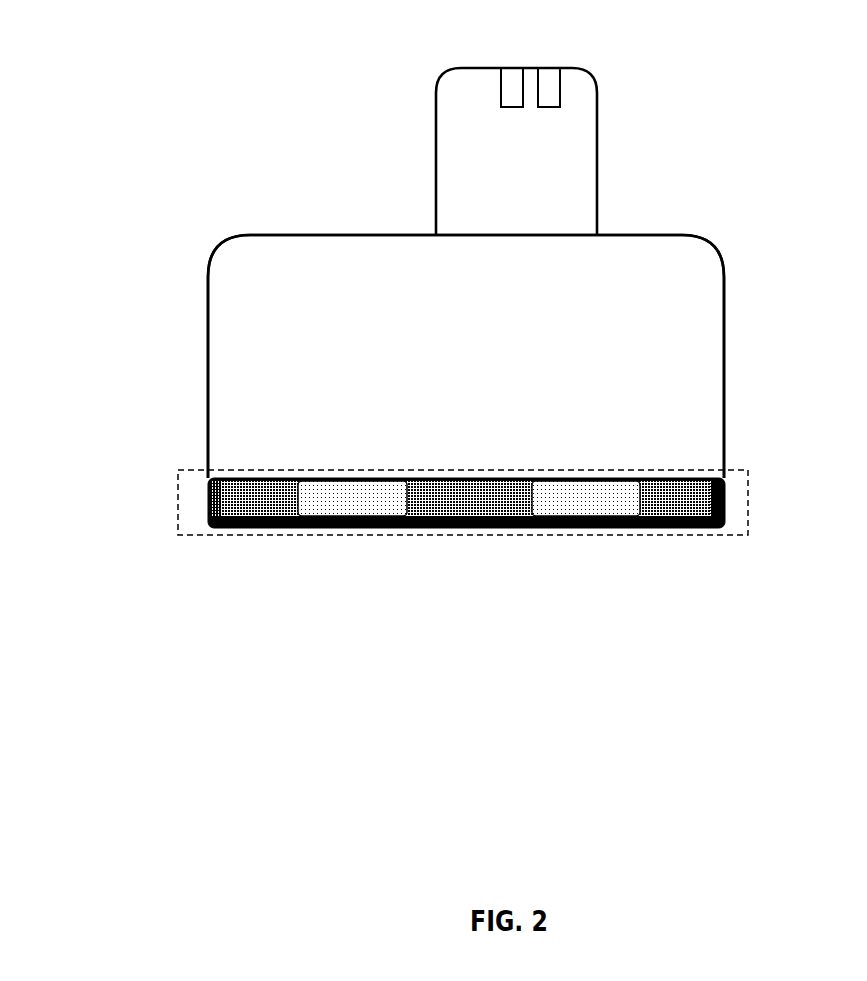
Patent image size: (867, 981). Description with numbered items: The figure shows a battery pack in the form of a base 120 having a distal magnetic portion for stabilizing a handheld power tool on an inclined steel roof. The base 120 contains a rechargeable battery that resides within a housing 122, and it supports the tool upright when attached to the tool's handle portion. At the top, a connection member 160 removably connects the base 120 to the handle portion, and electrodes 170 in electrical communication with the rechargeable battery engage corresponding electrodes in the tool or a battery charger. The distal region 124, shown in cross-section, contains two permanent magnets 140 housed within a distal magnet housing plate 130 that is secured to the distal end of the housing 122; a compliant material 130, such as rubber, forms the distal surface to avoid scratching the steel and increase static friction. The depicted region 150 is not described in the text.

The base 120 is at (197, 220).
The housing 122 is at (228, 345).
The distal region 124 is at (182, 490).
The distal magnet housing plate 130 is at (208, 517).
The permanent magnets 140 is at (338, 505).
The substrate 150 is at (683, 505).
The connection member 160 is at (452, 122).
The electrodes 170 is at (510, 78).